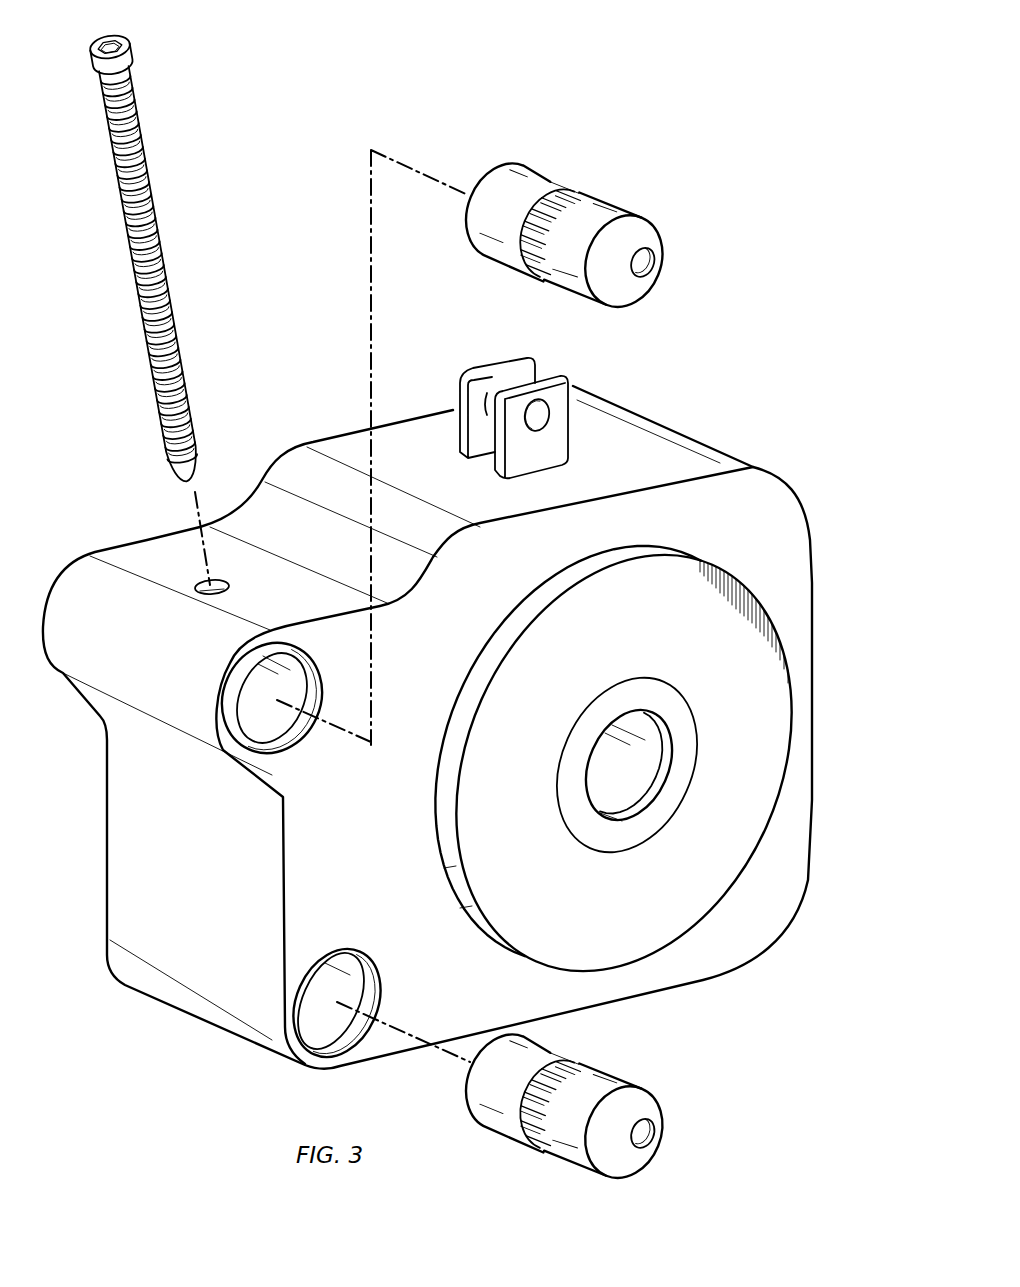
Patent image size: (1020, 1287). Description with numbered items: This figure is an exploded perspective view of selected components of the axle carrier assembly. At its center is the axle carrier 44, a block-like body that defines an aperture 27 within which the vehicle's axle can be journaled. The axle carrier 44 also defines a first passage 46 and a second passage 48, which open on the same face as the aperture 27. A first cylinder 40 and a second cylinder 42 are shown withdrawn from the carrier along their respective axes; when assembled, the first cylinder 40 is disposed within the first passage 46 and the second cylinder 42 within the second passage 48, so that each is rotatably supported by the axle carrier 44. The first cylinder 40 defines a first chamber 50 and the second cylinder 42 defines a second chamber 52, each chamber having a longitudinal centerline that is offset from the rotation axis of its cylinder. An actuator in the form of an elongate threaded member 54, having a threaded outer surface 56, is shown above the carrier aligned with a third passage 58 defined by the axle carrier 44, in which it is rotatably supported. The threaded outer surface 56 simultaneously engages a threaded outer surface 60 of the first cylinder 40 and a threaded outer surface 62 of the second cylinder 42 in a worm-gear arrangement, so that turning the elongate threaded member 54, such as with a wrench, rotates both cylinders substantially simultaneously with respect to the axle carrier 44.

The aperture 27 is at (624, 768).
The first cylinder 40 is at (579, 229).
The second cylinder 42 is at (597, 1114).
The axle carrier 44 is at (449, 714).
The first passage 46 is at (263, 708).
The second passage 48 is at (338, 993).
The first chamber 50 is at (652, 268).
The second chamber 52 is at (647, 1130).
The elongate threaded member 54 is at (157, 258).
The threaded outer surface 56 is at (167, 251).
The third passage 58 is at (200, 584).
The threaded outer surface of the first cylinder 60 is at (580, 190).
The threaded outer surface of the second cylinder 62 is at (543, 1148).